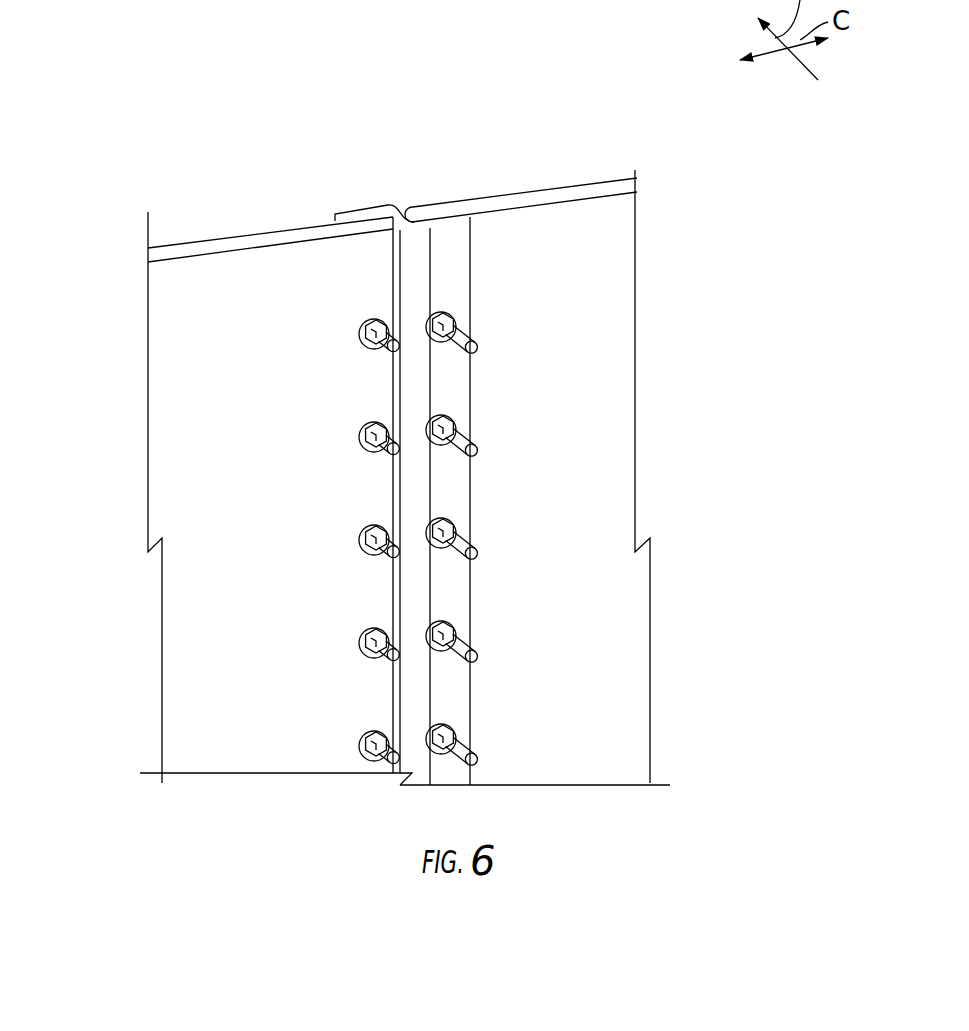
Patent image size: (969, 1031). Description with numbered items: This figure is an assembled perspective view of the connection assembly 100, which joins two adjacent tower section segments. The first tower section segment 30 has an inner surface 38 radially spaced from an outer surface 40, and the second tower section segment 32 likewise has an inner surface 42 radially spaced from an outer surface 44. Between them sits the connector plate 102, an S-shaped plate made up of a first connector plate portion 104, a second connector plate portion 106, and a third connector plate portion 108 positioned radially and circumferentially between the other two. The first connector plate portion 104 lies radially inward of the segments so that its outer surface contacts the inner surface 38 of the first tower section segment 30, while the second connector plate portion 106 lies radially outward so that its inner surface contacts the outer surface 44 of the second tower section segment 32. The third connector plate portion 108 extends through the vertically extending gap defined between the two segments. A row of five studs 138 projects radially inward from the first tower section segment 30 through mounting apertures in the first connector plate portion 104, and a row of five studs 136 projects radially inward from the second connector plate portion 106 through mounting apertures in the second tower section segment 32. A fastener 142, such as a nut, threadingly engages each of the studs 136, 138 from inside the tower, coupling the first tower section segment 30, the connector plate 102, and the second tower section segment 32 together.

The connection assembly 100 is at (165, 78).
The first tower section segment 30 is at (630, 158).
The second tower section segment 32 is at (174, 236).
The inner surface 38 is at (588, 657).
The outer surface 40 is at (569, 182).
The inner surface 42 is at (244, 645).
The outer surface 44 is at (246, 234).
The connector plate 102 is at (379, 172).
The first connector plate portion 104 is at (460, 278).
The second connector plate portion 106 is at (351, 211).
The third connector plate portion 108 is at (402, 210).
The studs 136 is at (372, 320).
The studs 138 is at (505, 441).
The fastener 142 is at (455, 412).